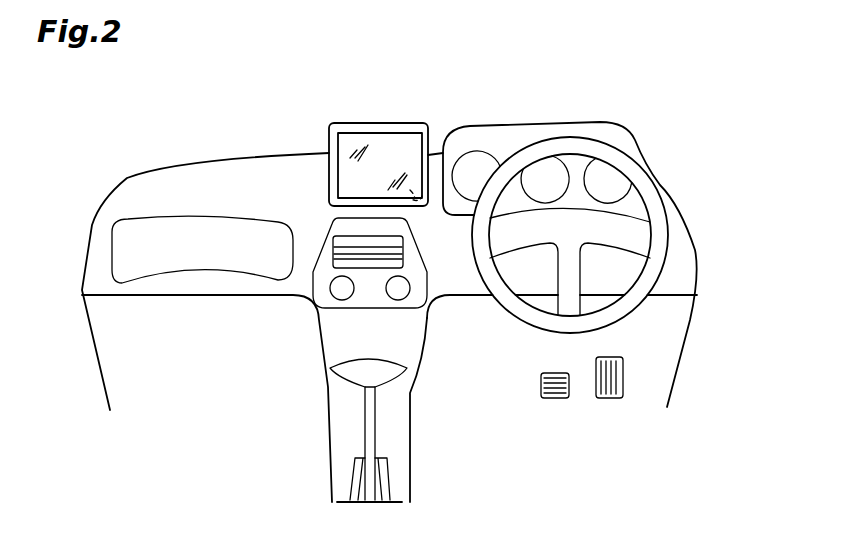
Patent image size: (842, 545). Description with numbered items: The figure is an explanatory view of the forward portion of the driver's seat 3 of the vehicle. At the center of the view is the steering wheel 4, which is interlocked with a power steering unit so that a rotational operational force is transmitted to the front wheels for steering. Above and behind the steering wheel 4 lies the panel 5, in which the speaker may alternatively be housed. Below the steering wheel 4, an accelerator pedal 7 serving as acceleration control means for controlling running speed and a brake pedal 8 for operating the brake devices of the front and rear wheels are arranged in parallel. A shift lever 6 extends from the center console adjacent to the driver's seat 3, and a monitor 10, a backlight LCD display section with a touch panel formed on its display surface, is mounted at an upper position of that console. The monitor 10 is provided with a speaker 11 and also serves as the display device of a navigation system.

The driver's seat 3 is at (695, 160).
The steering wheel 4 is at (660, 215).
The panel 5 is at (612, 136).
The shift lever 6 is at (367, 368).
The accelerator pedal 7 is at (625, 378).
The brake pedal 8 is at (555, 372).
The monitor 10 is at (328, 153).
The speaker 11 is at (421, 203).